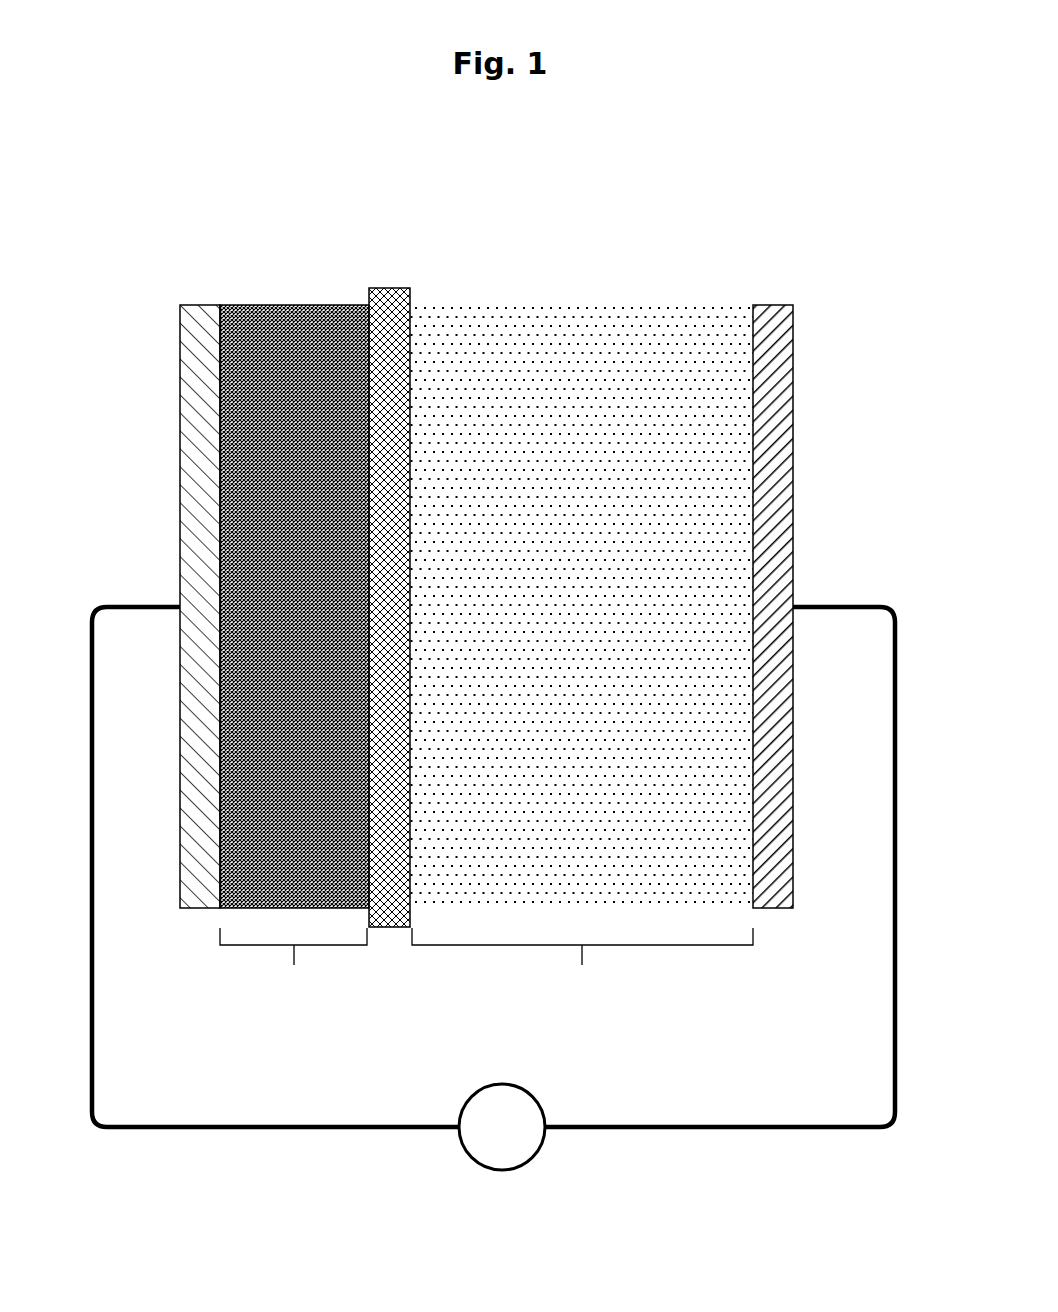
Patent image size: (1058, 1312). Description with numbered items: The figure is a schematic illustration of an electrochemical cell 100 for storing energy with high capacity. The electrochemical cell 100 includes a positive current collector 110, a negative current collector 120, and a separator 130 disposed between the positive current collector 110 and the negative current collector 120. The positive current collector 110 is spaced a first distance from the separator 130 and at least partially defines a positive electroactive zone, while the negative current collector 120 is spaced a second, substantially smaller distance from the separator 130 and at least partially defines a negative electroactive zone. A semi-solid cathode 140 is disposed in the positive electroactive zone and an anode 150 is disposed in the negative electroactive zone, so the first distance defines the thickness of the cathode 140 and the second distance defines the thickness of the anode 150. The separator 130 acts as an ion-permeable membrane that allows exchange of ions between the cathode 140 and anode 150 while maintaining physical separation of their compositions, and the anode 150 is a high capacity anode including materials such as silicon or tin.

The electrochemical cell 100 is at (840, 252).
The positive current collector 110 is at (773, 305).
The negative current collector 120 is at (200, 305).
The separator 130 is at (388, 288).
The semi-solid cathode 140 is at (582, 305).
The anode 150 is at (300, 305).